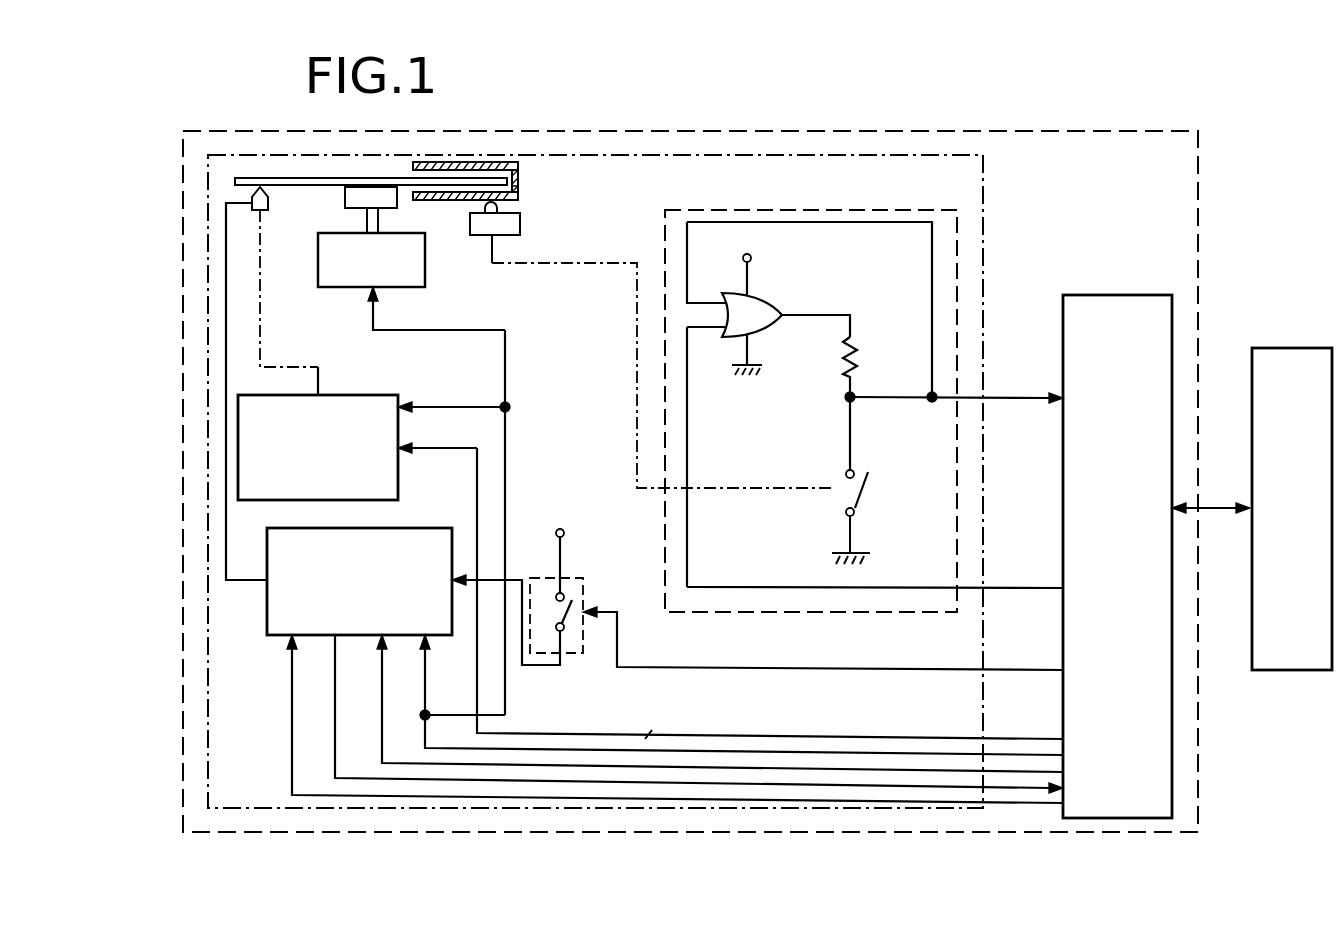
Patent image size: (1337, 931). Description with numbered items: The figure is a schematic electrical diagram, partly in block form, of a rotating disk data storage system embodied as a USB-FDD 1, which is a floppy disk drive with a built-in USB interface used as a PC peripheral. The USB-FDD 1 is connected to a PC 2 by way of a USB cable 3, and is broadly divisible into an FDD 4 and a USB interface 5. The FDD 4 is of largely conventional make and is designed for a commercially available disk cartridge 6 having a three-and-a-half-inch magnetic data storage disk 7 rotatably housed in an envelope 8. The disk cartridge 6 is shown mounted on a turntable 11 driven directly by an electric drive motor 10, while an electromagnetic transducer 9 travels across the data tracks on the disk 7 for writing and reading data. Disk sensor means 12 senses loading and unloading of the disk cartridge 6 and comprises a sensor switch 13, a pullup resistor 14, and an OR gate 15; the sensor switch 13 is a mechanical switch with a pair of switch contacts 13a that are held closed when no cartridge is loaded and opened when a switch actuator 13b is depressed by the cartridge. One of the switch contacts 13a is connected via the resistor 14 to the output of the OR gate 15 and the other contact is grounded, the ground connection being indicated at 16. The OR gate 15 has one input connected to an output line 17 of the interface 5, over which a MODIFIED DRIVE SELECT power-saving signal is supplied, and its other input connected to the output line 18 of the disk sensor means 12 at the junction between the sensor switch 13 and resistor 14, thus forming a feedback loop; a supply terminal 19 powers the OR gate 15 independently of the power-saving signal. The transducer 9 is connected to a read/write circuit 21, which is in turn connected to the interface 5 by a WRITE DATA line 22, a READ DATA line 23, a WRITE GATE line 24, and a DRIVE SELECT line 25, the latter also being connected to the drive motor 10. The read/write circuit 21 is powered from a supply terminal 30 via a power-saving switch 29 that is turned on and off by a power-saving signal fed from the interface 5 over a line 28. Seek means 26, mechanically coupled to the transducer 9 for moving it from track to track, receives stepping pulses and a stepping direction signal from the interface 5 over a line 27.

The USB-FDD 1 is at (1206, 207).
The PC 2 is at (1290, 348).
The USB cable 3 is at (1214, 518).
The FDD 4 is at (990, 276).
The USB interface 5 is at (1105, 295).
The disk cartridge 6 is at (533, 176).
The magnetic data storage disk 7 is at (313, 180).
The envelope 8 is at (520, 188).
The electromagnetic transducer 9 is at (268, 212).
The electric drive motor 10 is at (318, 265).
The turntable 11 is at (345, 199).
The disk sensor means 12 is at (790, 203).
The sensor switch 13 is at (826, 471).
The switch contacts 13a is at (846, 485).
The switch actuator 13b is at (470, 220).
The pullup resistor 14 is at (858, 357).
The OR gate 15 is at (770, 296).
The ground 16 is at (860, 550).
The output line 17 is at (1010, 586).
The output line 18 is at (1010, 397).
The supply terminal 19 is at (752, 258).
The read/write circuit 21 is at (427, 528).
The WRITE DATA line 22 is at (290, 694).
The READ DATA line 23 is at (333, 722).
The WRITE GATE line 24 is at (380, 722).
The DRIVE SELECT line 25 is at (428, 696).
The seek means 26 is at (353, 395).
The line 27 is at (458, 449).
The line 28 is at (891, 669).
The power-saving switch 29 is at (573, 577).
The supply terminal 30 is at (566, 533).